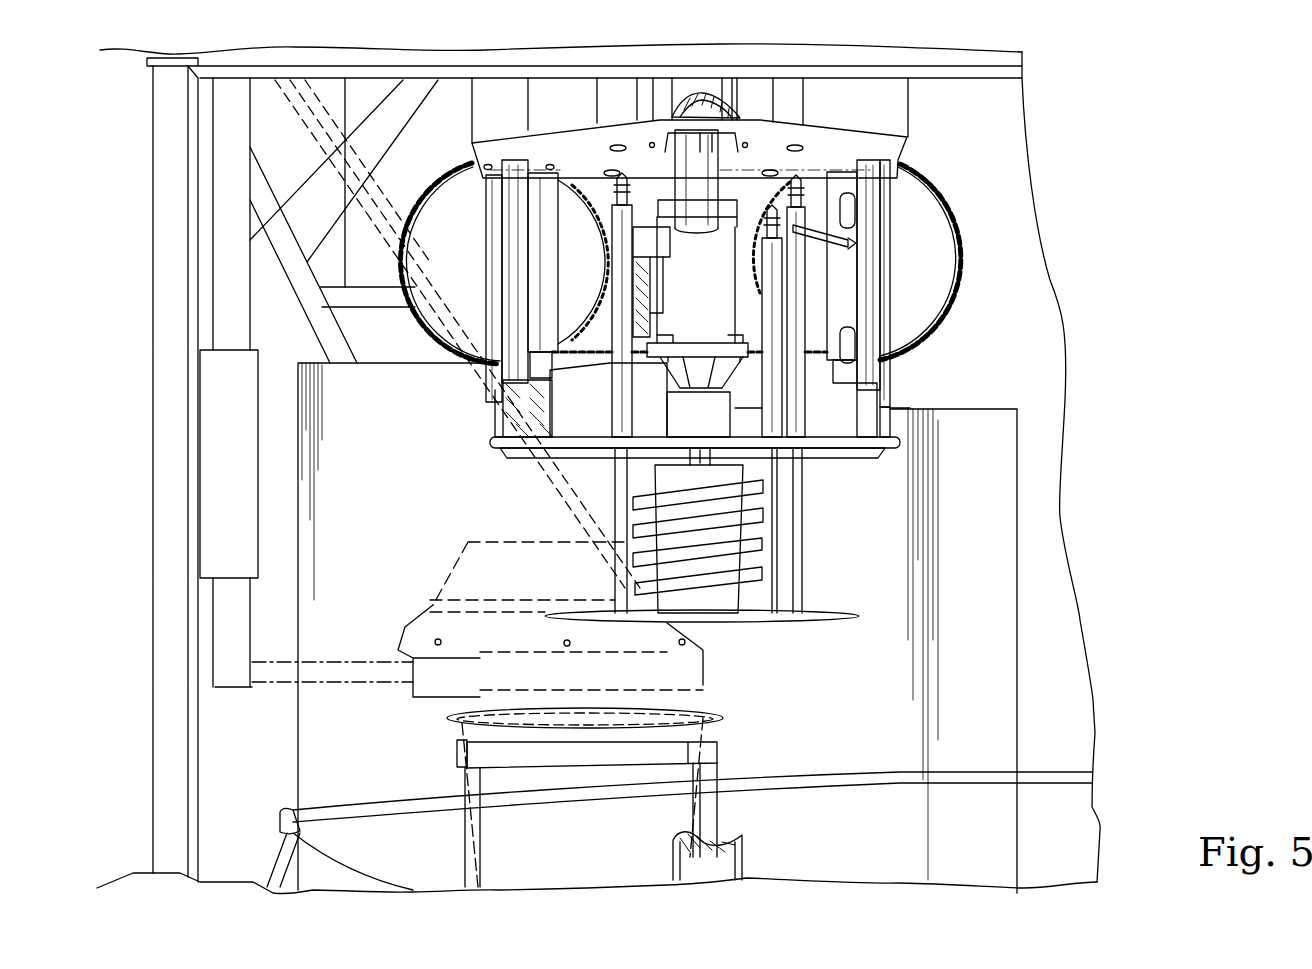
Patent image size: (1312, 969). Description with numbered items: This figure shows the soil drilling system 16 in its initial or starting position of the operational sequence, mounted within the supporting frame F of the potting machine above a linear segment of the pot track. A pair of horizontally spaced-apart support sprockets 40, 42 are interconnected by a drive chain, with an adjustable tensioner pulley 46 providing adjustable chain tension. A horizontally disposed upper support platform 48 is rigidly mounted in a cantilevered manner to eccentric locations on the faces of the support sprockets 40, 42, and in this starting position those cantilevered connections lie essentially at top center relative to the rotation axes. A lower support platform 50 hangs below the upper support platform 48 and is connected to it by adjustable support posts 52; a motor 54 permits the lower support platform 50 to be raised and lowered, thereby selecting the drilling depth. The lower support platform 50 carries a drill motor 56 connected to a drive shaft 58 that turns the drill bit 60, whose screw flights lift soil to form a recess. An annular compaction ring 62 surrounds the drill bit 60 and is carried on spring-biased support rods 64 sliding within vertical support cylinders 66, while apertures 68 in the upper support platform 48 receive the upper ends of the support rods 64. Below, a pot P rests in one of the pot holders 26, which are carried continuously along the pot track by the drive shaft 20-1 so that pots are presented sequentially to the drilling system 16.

The soil drilling system 16 is at (993, 173).
The drive shaft 20-1 is at (692, 90).
The pot holders 26 is at (722, 755).
The support sprocket 40 is at (587, 254).
The support sprocket 42 is at (937, 268).
The tensioner pulley 46 is at (452, 175).
The upper support platform 48 is at (586, 117).
The lower support platform 50 is at (858, 452).
The adjustable support posts 52 is at (493, 373).
The motor 54 is at (704, 195).
The drill motor 56 is at (705, 288).
The drive shaft 58 is at (687, 453).
The drill bit 60 is at (697, 488).
The compaction ring 62 is at (808, 623).
The support rods 64 is at (613, 560).
The support cylinders 66 is at (622, 377).
The apertures 68 is at (604, 173).
The supporting frame F is at (170, 363).
The pot P is at (447, 727).